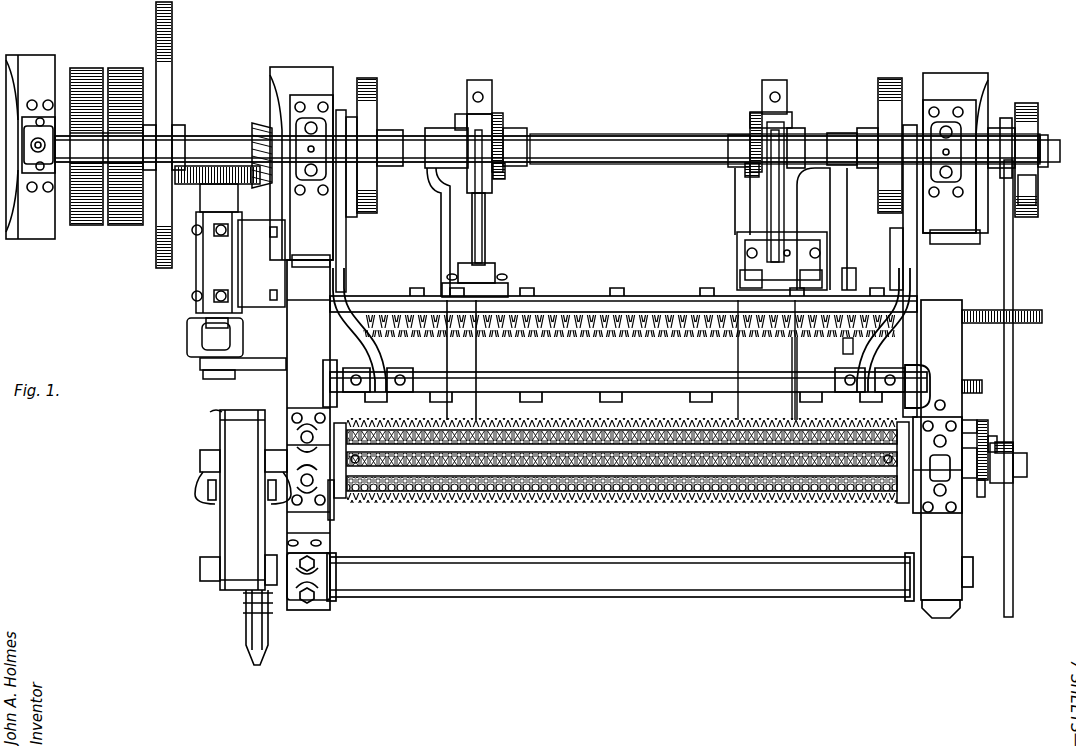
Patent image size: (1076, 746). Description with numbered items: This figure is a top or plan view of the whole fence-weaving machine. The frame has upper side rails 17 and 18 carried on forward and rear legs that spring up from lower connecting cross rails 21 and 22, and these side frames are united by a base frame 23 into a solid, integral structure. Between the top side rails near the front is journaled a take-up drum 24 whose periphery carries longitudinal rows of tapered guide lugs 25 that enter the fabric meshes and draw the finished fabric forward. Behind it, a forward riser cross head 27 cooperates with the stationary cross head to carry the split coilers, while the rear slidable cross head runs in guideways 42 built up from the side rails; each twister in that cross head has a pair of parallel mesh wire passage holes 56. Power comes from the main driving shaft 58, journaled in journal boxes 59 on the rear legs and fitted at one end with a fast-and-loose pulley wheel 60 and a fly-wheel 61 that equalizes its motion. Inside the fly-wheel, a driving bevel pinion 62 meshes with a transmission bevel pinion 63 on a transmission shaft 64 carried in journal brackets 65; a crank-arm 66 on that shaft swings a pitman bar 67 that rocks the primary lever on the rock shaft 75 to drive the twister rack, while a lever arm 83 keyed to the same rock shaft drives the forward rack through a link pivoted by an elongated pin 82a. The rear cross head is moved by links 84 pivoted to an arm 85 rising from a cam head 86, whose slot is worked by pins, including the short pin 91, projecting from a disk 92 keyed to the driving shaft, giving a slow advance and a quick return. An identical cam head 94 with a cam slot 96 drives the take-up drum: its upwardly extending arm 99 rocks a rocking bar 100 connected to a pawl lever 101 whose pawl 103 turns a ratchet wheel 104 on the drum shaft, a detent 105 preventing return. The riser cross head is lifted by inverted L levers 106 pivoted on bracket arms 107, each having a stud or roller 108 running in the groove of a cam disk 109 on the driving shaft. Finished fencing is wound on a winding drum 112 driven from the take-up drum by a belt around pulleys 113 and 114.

The upper side rail 17 is at (288, 378).
The upper side rail 18 is at (952, 355).
The lower connecting cross rail 21 is at (584, 300).
The lower connecting cross rail 22 is at (470, 224).
The base frame 23 is at (640, 134).
The take-up drum 24 is at (626, 500).
The guide lugs 25 is at (762, 500).
The forward riser cross head 27 is at (557, 385).
The guideways 42 is at (930, 380).
The mesh wire passage holes 56 is at (656, 338).
The main driving shaft 58 is at (201, 132).
The journal boxes 59 is at (317, 108).
The fast-and-loose pulley wheel 60 is at (110, 225).
The balance or fly-wheel 61 is at (178, 63).
The driving bevel pinion 62 is at (260, 122).
The transmission bevel pinion 63 is at (190, 185).
The transmission shaft 64 is at (210, 375).
The journal brackets 65 is at (238, 248).
The crank-arm 66 is at (198, 350).
The pitman bar 67 is at (257, 366).
The rock shaft 75 is at (790, 352).
The elongated pin 82a is at (846, 354).
The lever arm 83 is at (812, 284).
The links 84 is at (483, 240).
The arm 85 is at (458, 115).
The cam head 86 is at (492, 86).
The short pin or roller 91 is at (507, 172).
The disk 92 is at (504, 122).
The cam head 94 is at (1030, 215).
The cam slot 96 is at (1009, 118).
The upwardly extending arm 99 is at (1032, 180).
The rocking bar 100 is at (1013, 341).
The pawl lever 101 is at (1003, 452).
The pawl 103 is at (996, 442).
The ratchet wheel 104 is at (986, 492).
The detent 105 is at (988, 426).
The inverted L levers 106 is at (346, 231).
The bracket arm 107 is at (322, 250).
The stud or roller 108 is at (357, 127).
The cam disk 109 is at (378, 82).
The winding drum 112 is at (528, 596).
The pulley 113 is at (203, 405).
The pulley 114 is at (220, 590).